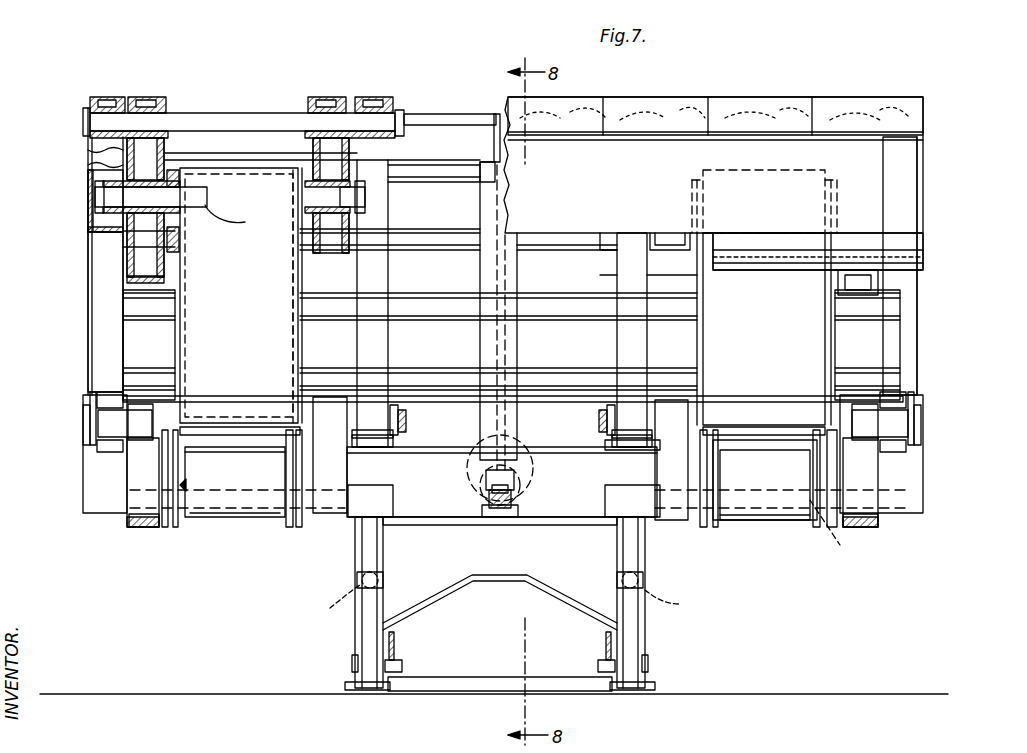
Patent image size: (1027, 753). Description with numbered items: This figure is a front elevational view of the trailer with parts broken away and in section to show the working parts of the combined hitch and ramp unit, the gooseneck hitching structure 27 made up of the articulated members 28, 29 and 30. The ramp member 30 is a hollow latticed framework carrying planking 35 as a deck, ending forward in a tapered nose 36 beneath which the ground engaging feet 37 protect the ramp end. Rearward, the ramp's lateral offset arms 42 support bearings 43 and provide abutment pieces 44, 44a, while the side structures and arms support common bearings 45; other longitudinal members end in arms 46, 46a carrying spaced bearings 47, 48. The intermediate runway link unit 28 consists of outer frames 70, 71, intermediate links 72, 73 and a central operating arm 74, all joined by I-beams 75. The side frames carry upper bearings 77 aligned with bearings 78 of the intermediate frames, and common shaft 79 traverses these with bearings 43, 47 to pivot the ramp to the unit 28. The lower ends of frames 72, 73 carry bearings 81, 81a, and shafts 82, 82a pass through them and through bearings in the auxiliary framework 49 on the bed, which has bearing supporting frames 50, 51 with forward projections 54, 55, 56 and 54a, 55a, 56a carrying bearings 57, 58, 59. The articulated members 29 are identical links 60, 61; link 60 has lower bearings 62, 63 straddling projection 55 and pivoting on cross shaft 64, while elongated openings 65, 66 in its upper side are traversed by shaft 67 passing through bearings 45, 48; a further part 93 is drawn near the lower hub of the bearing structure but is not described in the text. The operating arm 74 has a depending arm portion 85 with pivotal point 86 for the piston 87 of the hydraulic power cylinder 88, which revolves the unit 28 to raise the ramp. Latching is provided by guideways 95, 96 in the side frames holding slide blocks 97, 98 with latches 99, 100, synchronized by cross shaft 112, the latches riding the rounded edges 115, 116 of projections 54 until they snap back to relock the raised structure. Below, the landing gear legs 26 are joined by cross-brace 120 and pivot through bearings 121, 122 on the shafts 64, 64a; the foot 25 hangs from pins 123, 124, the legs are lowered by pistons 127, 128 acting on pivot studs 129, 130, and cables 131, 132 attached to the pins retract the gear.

The foot 25 is at (450, 688).
The legs 26 is at (357, 558).
The gooseneck hitching structure 27 is at (80, 247).
The intermediate runway link unit 28 is at (90, 353).
The articulated members 29 is at (168, 352).
The ramp member 30 is at (924, 138).
The planking 35 is at (798, 102).
The tapered nose 36 is at (898, 187).
The ground engaging feet 37 is at (900, 270).
The lateral offset arm 42 is at (165, 148).
The bearings 43 is at (150, 97).
The abutment piece 44 is at (100, 300).
The abutment piece 44a is at (860, 275).
The common bearings 45 is at (98, 180).
The arm 46 is at (315, 145).
The arm 46a is at (665, 250).
The bearing 47 is at (330, 97).
The bearing 48 is at (355, 218).
The auxiliary framework 49 is at (102, 515).
The bearing supporting frame 50 is at (222, 518).
The bearing supporting frame 51 is at (768, 520).
The projection 54 is at (138, 529).
The projection 54a is at (862, 526).
The projection 55 is at (247, 520).
The projection 55a is at (758, 522).
The projection 56 is at (320, 516).
The projection 56a is at (670, 522).
The bearing 57 is at (165, 530).
The bearing 58 is at (182, 484).
The bearing 59 is at (350, 485).
The link 60 is at (241, 301).
The link 61 is at (764, 302).
The bearing 62 is at (176, 530).
The bearing 63 is at (289, 530).
The cross shaft 64 is at (240, 493).
The shaft 64a is at (842, 533).
The elongated opening 65 is at (180, 222).
The elongated opening 66 is at (292, 235).
The shaft 67 is at (192, 205).
The outer frame 70 is at (100, 279).
The outer frame 71 is at (905, 323).
The intermediate link 72 is at (360, 342).
The intermediate link 73 is at (645, 345).
The operating arm 74 is at (508, 340).
The I-beams 75 is at (480, 225).
The upper bearing 77 is at (104, 97).
The bearings 78 is at (380, 97).
The common shaft 79 is at (232, 118).
The bearing 81 is at (392, 433).
The bearing 81a is at (612, 437).
The shaft 82 is at (408, 418).
The shaft 82a is at (600, 418).
The depending arm portion 85 is at (496, 508).
The pivotal point 86 is at (553, 525).
The piston 87 is at (520, 480).
The hydraulically operated power cylinder 88 is at (532, 440).
The bearing cap 93 is at (155, 283).
The guideway 95 is at (108, 395).
The guideway 96 is at (900, 398).
The block 97 is at (100, 405).
The block 98 is at (918, 418).
The latch 99 is at (108, 426).
The latch 100 is at (900, 426).
The cross shaft 112 is at (532, 315).
The rounded forward edge 115 is at (140, 471).
The rounded forward edge 116 is at (868, 483).
The cross-brace 120 is at (505, 570).
The bearing 121 is at (378, 525).
The bearing 122 is at (642, 486).
The pin 123 is at (350, 660).
The pin 124 is at (652, 662).
The piston 127 is at (382, 582).
The piston 128 is at (645, 582).
The pivot stud 129 is at (330, 606).
The pivot stud 130 is at (679, 601).
The cable 131 is at (398, 645).
The cable 132 is at (605, 645).